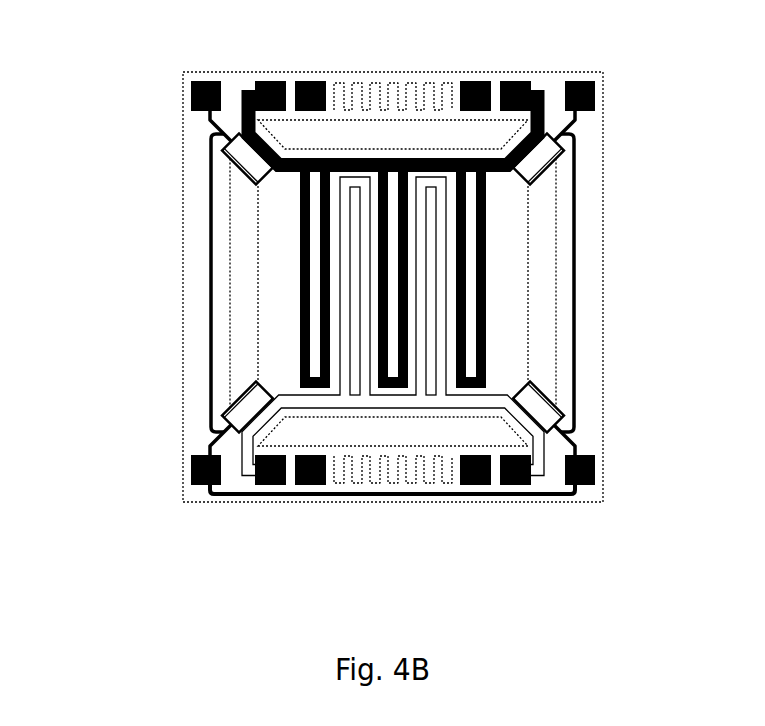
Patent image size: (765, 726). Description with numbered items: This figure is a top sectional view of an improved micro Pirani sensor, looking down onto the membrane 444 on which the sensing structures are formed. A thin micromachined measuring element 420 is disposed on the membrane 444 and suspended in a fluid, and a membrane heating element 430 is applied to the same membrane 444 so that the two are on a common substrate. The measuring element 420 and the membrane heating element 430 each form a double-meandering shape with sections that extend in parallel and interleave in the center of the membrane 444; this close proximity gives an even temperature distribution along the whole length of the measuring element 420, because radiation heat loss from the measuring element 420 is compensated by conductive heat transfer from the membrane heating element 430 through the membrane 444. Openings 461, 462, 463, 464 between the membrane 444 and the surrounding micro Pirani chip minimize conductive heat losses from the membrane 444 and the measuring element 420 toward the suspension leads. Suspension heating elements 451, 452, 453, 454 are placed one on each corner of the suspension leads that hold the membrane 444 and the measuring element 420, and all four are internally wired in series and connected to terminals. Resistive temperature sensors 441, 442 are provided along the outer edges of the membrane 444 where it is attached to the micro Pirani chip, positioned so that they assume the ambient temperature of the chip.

The measuring element 420 is at (300, 286).
The membrane heating element 430 is at (340, 320).
The resistive temperature sensor 441 is at (361, 82).
The resistive temperature sensor 442 is at (423, 485).
The membrane 444 is at (500, 336).
The suspension heating element 451 is at (228, 155).
The suspension heating element 452 is at (247, 412).
The suspension heating element 453 is at (543, 412).
The suspension heating element 454 is at (542, 152).
The opening 461 is at (240, 237).
The opening 462 is at (352, 430).
The opening 463 is at (543, 290).
The opening 464 is at (416, 137).